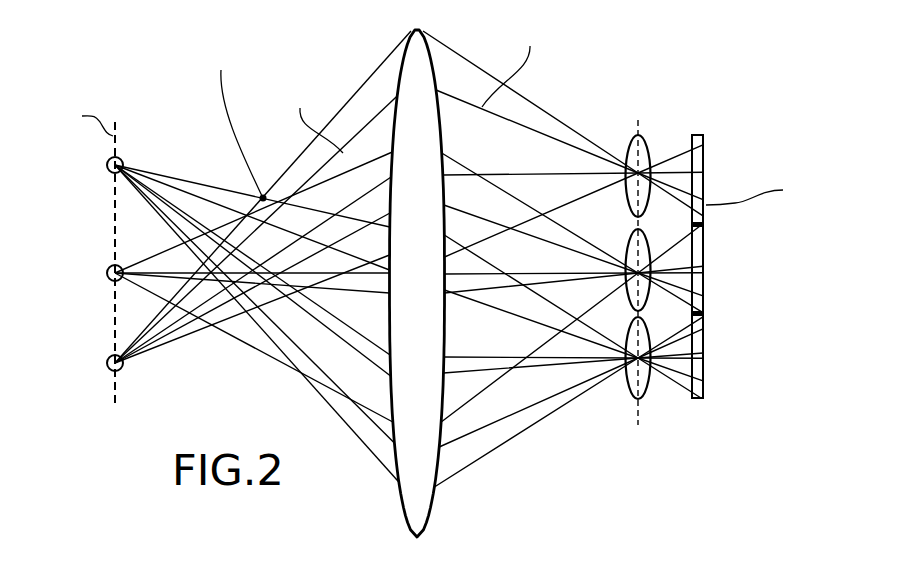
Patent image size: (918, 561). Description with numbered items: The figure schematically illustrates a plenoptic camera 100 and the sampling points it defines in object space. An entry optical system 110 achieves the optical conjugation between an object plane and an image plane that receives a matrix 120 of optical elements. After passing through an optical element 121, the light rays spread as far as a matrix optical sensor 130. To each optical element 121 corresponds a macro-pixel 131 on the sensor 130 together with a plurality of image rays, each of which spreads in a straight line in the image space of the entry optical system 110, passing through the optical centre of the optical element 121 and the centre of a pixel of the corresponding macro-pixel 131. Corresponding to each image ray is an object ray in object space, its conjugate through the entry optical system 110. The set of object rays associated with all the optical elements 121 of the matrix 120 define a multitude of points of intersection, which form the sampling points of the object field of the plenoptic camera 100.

The plenoptic camera 100 is at (650, 79).
The entry optical system 110 is at (412, 56).
The matrix of optical elements 120 is at (624, 288).
The optical element 121 is at (627, 158).
The matrix optical sensor 130 is at (745, 231).
The macro-pixel 131 is at (697, 166).